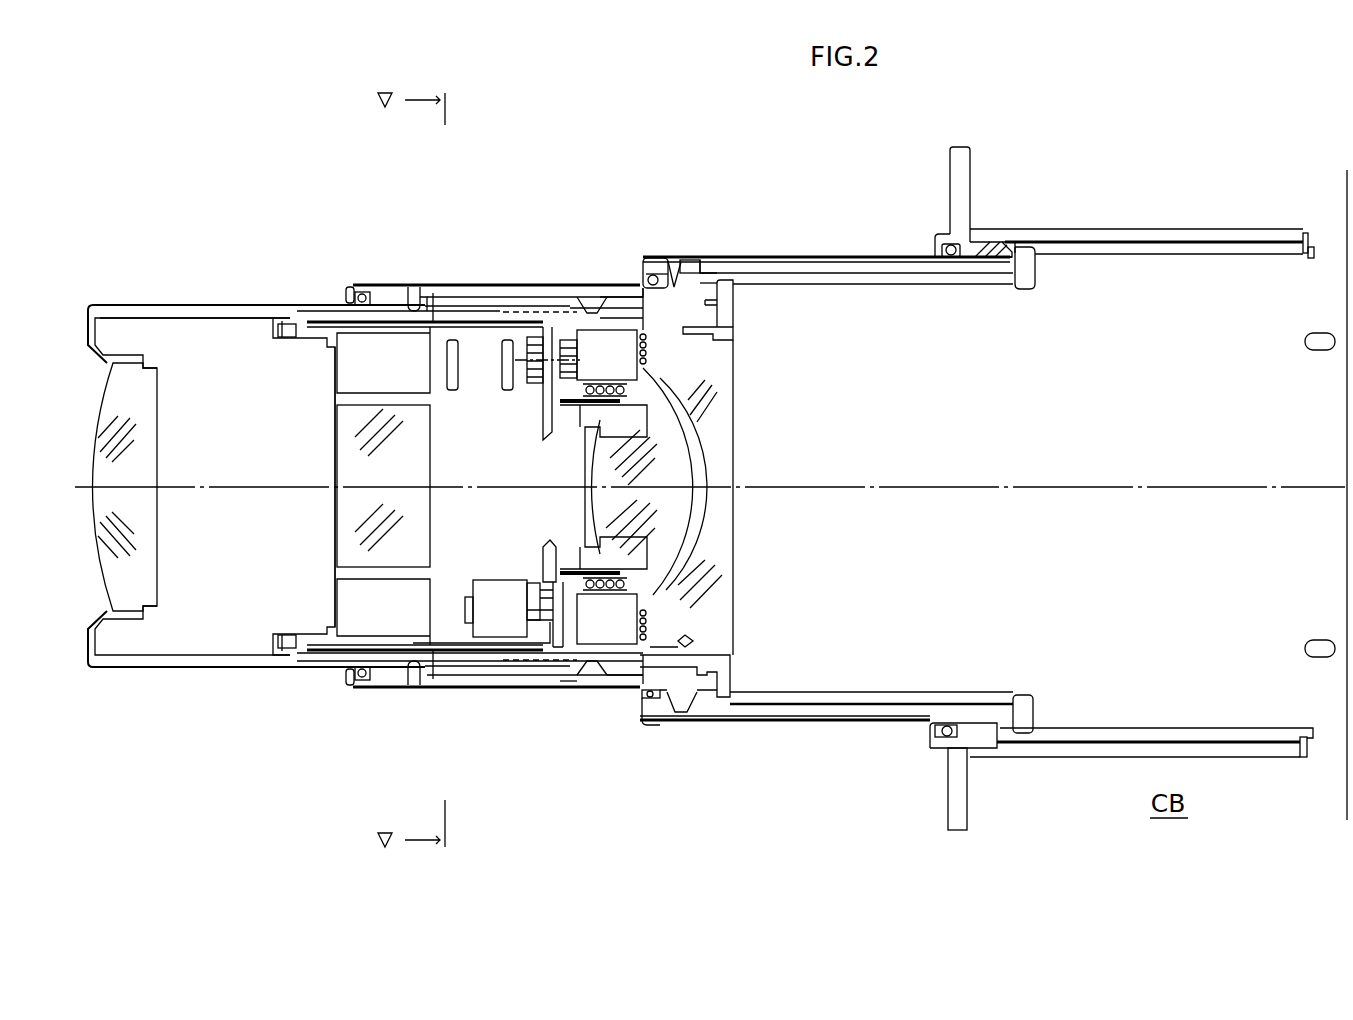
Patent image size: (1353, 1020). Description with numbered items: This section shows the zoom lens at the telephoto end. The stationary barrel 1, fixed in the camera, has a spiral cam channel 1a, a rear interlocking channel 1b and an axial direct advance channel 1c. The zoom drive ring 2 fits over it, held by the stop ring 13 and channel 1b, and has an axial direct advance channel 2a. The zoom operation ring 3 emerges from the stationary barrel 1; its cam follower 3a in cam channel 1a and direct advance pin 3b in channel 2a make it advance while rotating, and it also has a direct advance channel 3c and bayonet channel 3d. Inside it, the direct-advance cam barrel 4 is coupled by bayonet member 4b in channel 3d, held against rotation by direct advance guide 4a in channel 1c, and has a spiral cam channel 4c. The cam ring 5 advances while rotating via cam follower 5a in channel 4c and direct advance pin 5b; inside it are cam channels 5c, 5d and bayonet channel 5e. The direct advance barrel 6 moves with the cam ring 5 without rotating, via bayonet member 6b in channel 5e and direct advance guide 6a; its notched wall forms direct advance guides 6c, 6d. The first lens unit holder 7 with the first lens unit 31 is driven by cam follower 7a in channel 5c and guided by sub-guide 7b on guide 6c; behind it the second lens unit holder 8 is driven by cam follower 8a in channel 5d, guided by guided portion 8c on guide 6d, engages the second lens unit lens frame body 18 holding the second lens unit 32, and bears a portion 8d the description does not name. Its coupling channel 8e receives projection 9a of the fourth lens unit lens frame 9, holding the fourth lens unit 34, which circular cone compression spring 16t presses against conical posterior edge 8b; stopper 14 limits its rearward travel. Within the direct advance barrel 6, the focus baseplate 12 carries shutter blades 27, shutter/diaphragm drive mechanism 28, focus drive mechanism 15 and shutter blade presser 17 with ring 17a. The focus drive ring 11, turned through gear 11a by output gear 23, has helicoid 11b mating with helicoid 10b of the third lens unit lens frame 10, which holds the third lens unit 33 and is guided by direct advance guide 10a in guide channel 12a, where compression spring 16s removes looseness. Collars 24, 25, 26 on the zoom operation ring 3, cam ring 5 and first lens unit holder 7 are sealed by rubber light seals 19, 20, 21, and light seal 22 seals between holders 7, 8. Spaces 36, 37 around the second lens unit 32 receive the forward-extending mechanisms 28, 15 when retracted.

The stationary barrel 1 is at (1133, 254).
The cam channel 1a is at (1000, 258).
The interlocking channel 1b is at (1310, 257).
The direct advance channel 1c is at (1023, 240).
The zoom drive ring 2 is at (1133, 229).
The direct advance channel 2a is at (987, 237).
The zoom operation ring 3 is at (830, 262).
The cam follower 3a is at (1000, 238).
The direct advance pin 3b is at (985, 233).
The direct advance channel 3c is at (700, 275).
The bayonet channel 3d is at (680, 263).
The direct-advance cam barrel 4 is at (860, 280).
The direct advance guide 4a is at (1030, 289).
The bayonet member 4b is at (667, 263).
The cam channel 4c is at (745, 272).
The cam ring 5 is at (482, 300).
The cam follower 5a is at (703, 280).
The direct advance pin 5b is at (688, 265).
The first cam channel 5c is at (423, 295).
The second cam channel 5d is at (583, 297).
The bayonet channel 5e is at (703, 332).
The direct advance barrel 6 is at (733, 318).
The direct advance guide 6a is at (733, 297).
The bayonet member 6b is at (735, 300).
The direct advance guide 6c is at (432, 297).
The direct advance guide 6d is at (610, 297).
The first lens unit holder 7 is at (182, 306).
The cam follower 7a is at (400, 292).
The sub-guide 7b is at (305, 308).
The second lens unit holder 8 is at (460, 285).
The cam follower 8a is at (580, 285).
The posterior edge 8b is at (602, 677).
The guided portion 8c is at (510, 297).
The barrel bearing 8d is at (355, 290).
The coupling channel 8e is at (513, 662).
The fourth lens unit lens frame 9 is at (693, 637).
The projection 9a is at (567, 683).
The third lens unit lens frame 10 is at (580, 413).
The direct advance guide 10a is at (650, 380).
The helicoid 10b is at (722, 458).
The focus drive ring 11 is at (556, 403).
The gear 11a is at (575, 610).
The helicoid 11b is at (540, 585).
The focus baseplate 12 is at (630, 300).
The direct advance guide channel 12a is at (650, 362).
The stop ring 13 is at (1310, 230).
The stopper 14 is at (1312, 352).
The focus drive mechanism 15 is at (503, 370).
The compression spring 16s is at (622, 395).
The circular cone compression spring 16t is at (650, 615).
The shutter blade presser 17 is at (540, 397).
The ring 17a is at (440, 333).
The second lens unit lens frame body 18 is at (323, 380).
The rubber ring light seal 19 is at (935, 732).
The rubber ring light seal 20 is at (655, 725).
The rubber ring light seal 21 is at (358, 695).
The rubber light seal 22 is at (283, 652).
The output gear 23 is at (586, 332).
The collar 24 is at (867, 258).
The collar 25 is at (527, 320).
The collar 26 is at (222, 305).
The shutter blades 27 is at (545, 440).
The shutter/diaphragm drive mechanism 28 is at (493, 583).
The first lens unit 31 is at (158, 522).
The second lens unit 32 is at (337, 530).
The third lens unit 33 is at (600, 520).
The fourth lens unit 34 is at (722, 503).
The space 36 is at (395, 640).
The space 37 is at (353, 288).